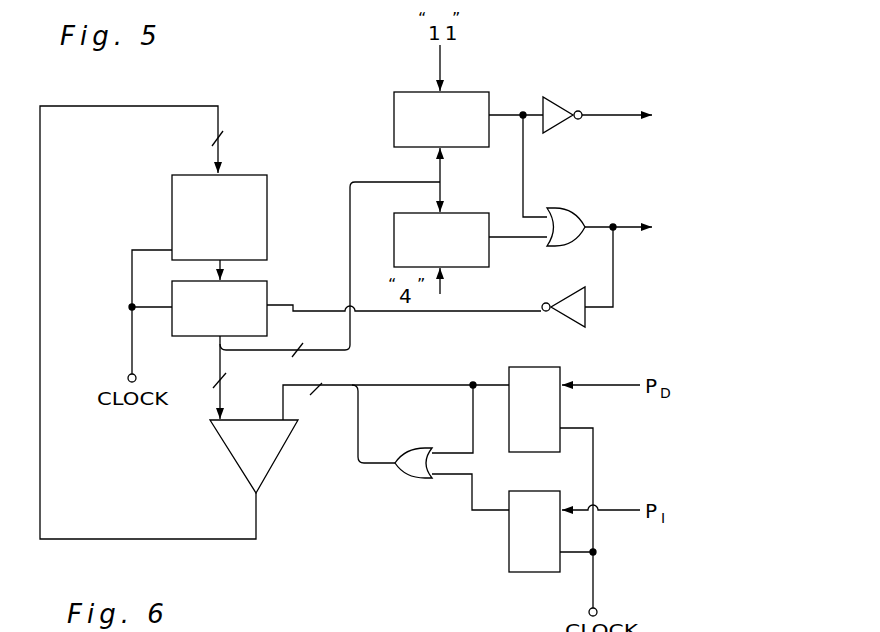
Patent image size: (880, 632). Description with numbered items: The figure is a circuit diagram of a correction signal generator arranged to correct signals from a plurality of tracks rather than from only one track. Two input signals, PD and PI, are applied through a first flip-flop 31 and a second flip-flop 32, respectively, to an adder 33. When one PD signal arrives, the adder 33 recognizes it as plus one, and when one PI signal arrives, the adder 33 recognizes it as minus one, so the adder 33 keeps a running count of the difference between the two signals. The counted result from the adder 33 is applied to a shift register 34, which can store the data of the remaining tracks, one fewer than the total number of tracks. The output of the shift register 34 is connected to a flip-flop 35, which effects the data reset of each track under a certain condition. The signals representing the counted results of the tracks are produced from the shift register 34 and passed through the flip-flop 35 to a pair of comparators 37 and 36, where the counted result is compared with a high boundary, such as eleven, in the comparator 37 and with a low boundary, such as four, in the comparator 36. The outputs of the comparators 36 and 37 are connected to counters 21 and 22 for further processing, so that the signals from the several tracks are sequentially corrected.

The counter 21 is at (692, 225).
The counter 22 is at (692, 114).
The flip-flop 31 is at (533, 367).
The flip-flop 32 is at (525, 572).
The adder 33 is at (267, 473).
The shift register 34 is at (245, 175).
The flip-flop 35 is at (262, 281).
The comparator 36 is at (470, 213).
The comparator 37 is at (472, 92).